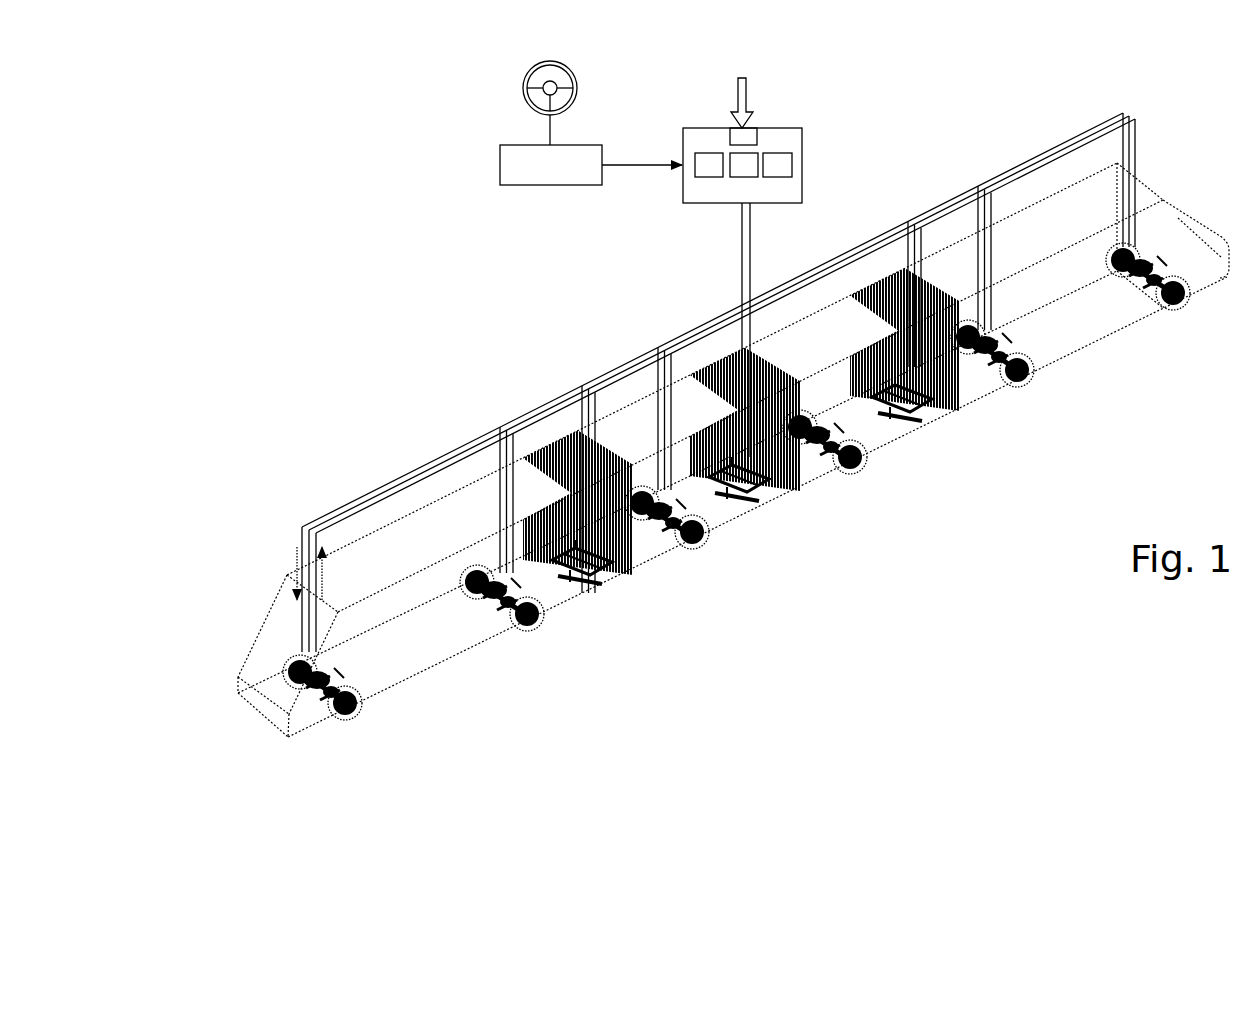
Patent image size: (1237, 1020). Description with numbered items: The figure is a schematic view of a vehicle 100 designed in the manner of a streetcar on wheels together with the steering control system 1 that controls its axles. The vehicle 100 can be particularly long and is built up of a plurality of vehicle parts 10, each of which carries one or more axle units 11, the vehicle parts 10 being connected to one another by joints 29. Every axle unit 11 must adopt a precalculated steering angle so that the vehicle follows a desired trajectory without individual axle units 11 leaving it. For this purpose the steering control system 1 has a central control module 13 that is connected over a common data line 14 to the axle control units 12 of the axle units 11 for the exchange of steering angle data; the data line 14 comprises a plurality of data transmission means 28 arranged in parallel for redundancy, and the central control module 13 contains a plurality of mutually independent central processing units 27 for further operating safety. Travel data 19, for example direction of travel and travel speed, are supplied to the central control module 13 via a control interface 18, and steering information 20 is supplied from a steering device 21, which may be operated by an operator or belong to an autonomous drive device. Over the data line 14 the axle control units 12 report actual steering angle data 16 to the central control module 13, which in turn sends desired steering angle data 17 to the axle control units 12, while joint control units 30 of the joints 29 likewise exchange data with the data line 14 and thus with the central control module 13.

The steering control system 1 is at (860, 183).
The vehicle 100 is at (701, 439).
The vehicle parts 10 is at (830, 303).
The axle units 11 is at (345, 722).
The axle control units 12 is at (325, 707).
The central control module 13 is at (753, 154).
The common data line 14 is at (312, 513).
The upstream signal line 16 is at (323, 570).
The desired steering angle data 17 is at (296, 557).
The control interface 18 is at (752, 133).
The travel data 19 is at (748, 90).
The steering information 20 is at (630, 163).
The steering device 21 is at (518, 123).
The central processing units 27 is at (775, 165).
The data transmission means 28 is at (428, 476).
The joints 29 is at (592, 573).
The joint control units 30 is at (573, 584).